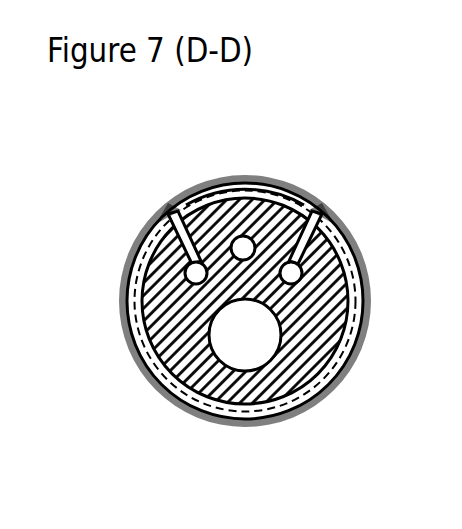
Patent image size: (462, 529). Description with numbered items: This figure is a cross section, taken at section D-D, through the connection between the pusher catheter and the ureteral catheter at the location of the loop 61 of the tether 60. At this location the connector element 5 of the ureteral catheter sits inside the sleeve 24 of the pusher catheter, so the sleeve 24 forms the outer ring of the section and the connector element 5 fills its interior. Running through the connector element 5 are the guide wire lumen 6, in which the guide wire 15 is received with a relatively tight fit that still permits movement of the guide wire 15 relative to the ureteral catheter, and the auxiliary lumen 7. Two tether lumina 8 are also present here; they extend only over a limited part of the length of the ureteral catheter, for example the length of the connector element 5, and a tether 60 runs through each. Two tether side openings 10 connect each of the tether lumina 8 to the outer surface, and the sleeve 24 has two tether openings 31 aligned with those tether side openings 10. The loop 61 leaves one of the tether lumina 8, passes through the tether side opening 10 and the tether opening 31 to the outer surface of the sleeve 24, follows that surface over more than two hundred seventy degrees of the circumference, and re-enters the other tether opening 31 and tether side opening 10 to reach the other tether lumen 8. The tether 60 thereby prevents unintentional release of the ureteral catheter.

The connector element 5 is at (328, 318).
The guide wire lumen 6 is at (147, 375).
The auxiliary lumen 7 is at (250, 243).
The tether lumina 8 is at (190, 275).
The tether side openings 10 is at (157, 222).
The guide wire 15 is at (262, 343).
The sleeve 24 is at (203, 415).
The tether openings 31 is at (172, 212).
The tether 60 is at (227, 185).
The loop 61 is at (132, 353).